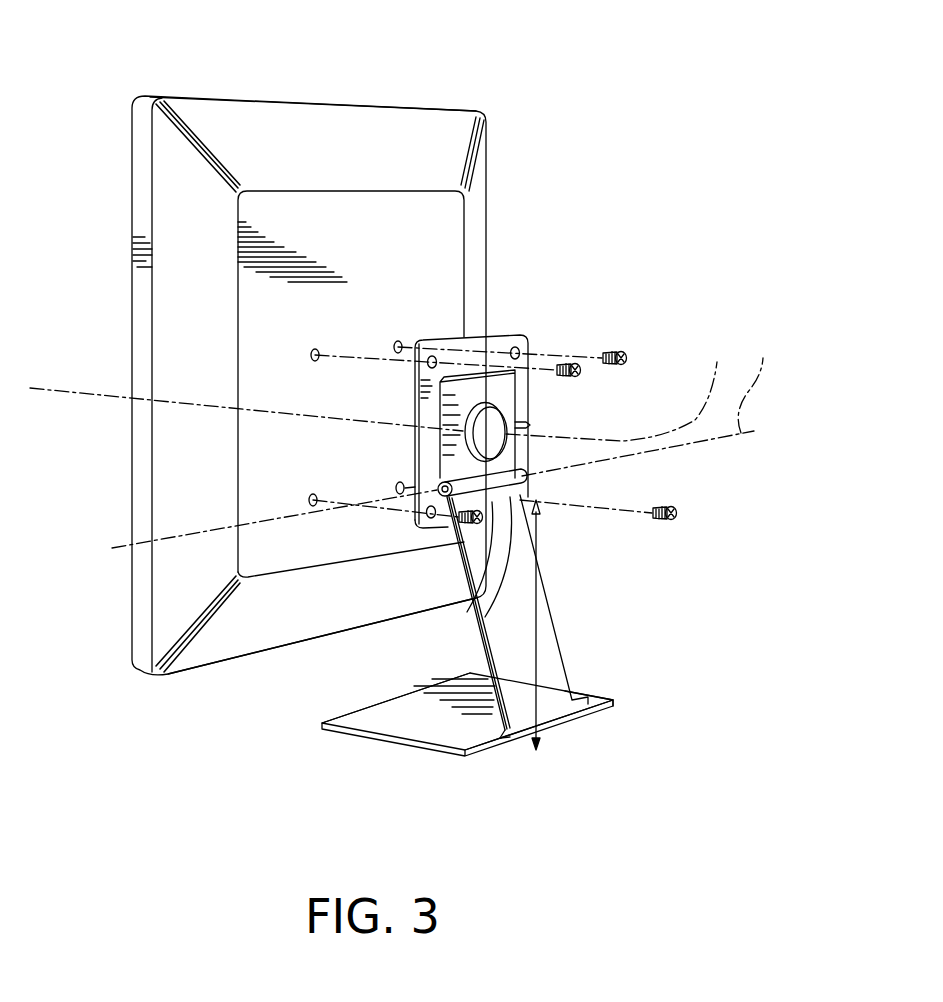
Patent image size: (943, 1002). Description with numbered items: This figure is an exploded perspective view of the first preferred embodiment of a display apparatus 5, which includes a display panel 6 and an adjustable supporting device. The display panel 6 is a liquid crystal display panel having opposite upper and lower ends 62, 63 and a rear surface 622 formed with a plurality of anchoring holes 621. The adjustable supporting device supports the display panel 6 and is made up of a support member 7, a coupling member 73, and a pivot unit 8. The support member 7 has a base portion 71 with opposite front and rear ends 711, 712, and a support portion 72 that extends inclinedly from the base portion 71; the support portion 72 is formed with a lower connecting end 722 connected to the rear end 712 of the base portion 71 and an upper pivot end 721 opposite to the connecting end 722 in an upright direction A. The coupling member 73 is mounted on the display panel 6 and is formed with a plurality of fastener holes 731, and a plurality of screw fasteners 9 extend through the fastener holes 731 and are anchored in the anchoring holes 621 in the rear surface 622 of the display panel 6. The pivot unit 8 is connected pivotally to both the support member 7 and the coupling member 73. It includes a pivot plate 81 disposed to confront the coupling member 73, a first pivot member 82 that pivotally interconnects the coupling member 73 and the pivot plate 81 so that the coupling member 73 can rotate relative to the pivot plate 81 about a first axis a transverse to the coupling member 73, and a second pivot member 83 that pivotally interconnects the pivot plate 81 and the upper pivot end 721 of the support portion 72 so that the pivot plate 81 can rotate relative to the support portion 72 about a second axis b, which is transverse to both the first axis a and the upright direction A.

The display apparatus 5 is at (636, 181).
The display panel 6 is at (252, 77).
The upper end 62 is at (316, 120).
The anchoring holes 621 is at (316, 350).
The rear surface 622 is at (298, 400).
The lower end 63 is at (231, 642).
The support member 7 is at (566, 659).
The base portion 71 is at (425, 727).
The front end 711 is at (426, 690).
The rear end 712 is at (497, 743).
The support portion 72 is at (488, 680).
The upper pivot end 721 is at (473, 600).
The lower connecting end 722 is at (548, 706).
The coupling member 73 is at (473, 347).
The fastener holes 731 is at (432, 356).
The pivot unit 8 is at (532, 425).
The pivot plate 81 is at (500, 389).
The first pivot member 82 is at (508, 404).
The second pivot member 83 is at (514, 634).
The screw fasteners 9 is at (623, 352).
The first axis a is at (374, 383).
The second axis b is at (440, 437).
The upright direction A is at (547, 630).